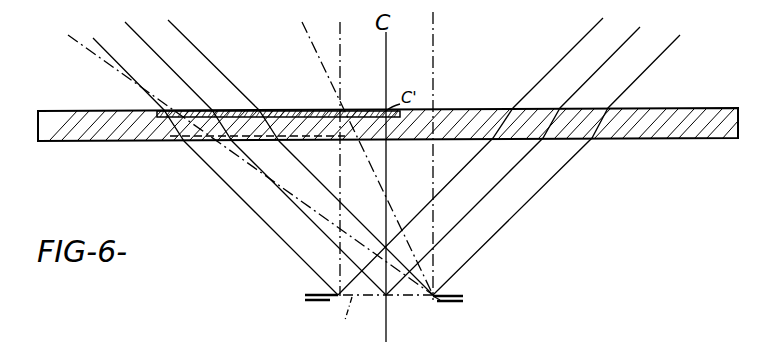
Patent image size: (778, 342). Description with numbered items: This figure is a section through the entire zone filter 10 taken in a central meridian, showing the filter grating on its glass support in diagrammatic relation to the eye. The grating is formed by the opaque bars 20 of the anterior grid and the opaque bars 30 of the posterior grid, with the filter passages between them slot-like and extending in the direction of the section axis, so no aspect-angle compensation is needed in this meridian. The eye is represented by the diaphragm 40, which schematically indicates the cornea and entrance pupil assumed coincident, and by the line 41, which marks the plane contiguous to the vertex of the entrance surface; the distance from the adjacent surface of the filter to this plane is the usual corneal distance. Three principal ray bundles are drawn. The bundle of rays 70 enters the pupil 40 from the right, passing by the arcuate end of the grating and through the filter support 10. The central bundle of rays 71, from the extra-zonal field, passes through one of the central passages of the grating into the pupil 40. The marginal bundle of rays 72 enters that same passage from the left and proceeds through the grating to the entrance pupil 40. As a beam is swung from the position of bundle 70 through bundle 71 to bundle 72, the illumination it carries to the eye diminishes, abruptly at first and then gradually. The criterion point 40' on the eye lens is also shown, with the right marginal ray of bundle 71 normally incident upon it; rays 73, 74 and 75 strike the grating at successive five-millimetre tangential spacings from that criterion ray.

The zone filter 10 is at (676, 108).
The bars 20 is at (290, 111).
The bars 30 is at (262, 139).
The diaphragm 40 is at (387, 314).
The criterion point 40' is at (427, 319).
The plane contiguous to the vertex of the entrance surface 41 is at (341, 319).
The bundle of rays 70 is at (508, 177).
The central bundle of rays 71 is at (387, 188).
The marginal bundle of rays 72 is at (217, 177).
The ray 73 is at (360, 150).
The ray 74 is at (300, 157).
The ray 75 is at (268, 187).